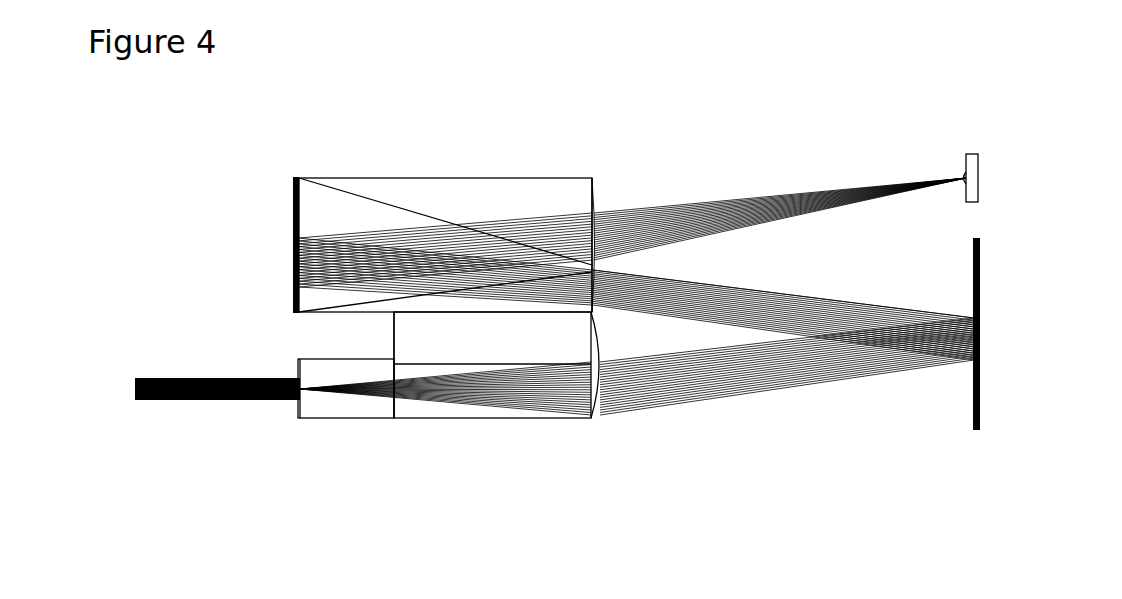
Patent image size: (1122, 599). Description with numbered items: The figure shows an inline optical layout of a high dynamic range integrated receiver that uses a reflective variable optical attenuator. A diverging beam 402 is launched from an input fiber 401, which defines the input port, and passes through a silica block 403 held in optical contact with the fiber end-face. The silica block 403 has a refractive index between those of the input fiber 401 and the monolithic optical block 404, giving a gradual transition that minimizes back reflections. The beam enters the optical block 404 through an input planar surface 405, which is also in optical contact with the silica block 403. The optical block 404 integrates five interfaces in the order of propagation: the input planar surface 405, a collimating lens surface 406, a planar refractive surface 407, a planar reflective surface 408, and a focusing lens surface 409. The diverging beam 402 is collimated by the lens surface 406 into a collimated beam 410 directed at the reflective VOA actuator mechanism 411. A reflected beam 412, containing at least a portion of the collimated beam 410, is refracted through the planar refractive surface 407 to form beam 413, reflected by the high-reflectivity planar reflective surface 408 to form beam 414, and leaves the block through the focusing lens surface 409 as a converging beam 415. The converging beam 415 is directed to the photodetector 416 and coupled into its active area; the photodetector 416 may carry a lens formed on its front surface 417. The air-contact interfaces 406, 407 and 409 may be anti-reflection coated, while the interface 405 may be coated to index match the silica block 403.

The input fiber 401 is at (177, 378).
The diverging beam 402 is at (325, 405).
The silica block 403 is at (346, 409).
The monolithic optical block 404 is at (425, 160).
The input planar surface 405 is at (400, 407).
The collimating lens surface 406 is at (602, 412).
The planar refractive surface 407 is at (622, 263).
The planar reflective surface 408 is at (292, 182).
The focusing lens surface 409 is at (593, 195).
The collimated beam 410 is at (787, 375).
The reflective VOA actuator mechanism 411 is at (978, 410).
The reflected beam 412 is at (783, 309).
The refracted beam 413 is at (435, 300).
The reflected beam from planar reflective surface 414 is at (527, 220).
The converging beam 415 is at (780, 208).
The photodetector 416 is at (1006, 178).
The front surface 417 is at (948, 162).